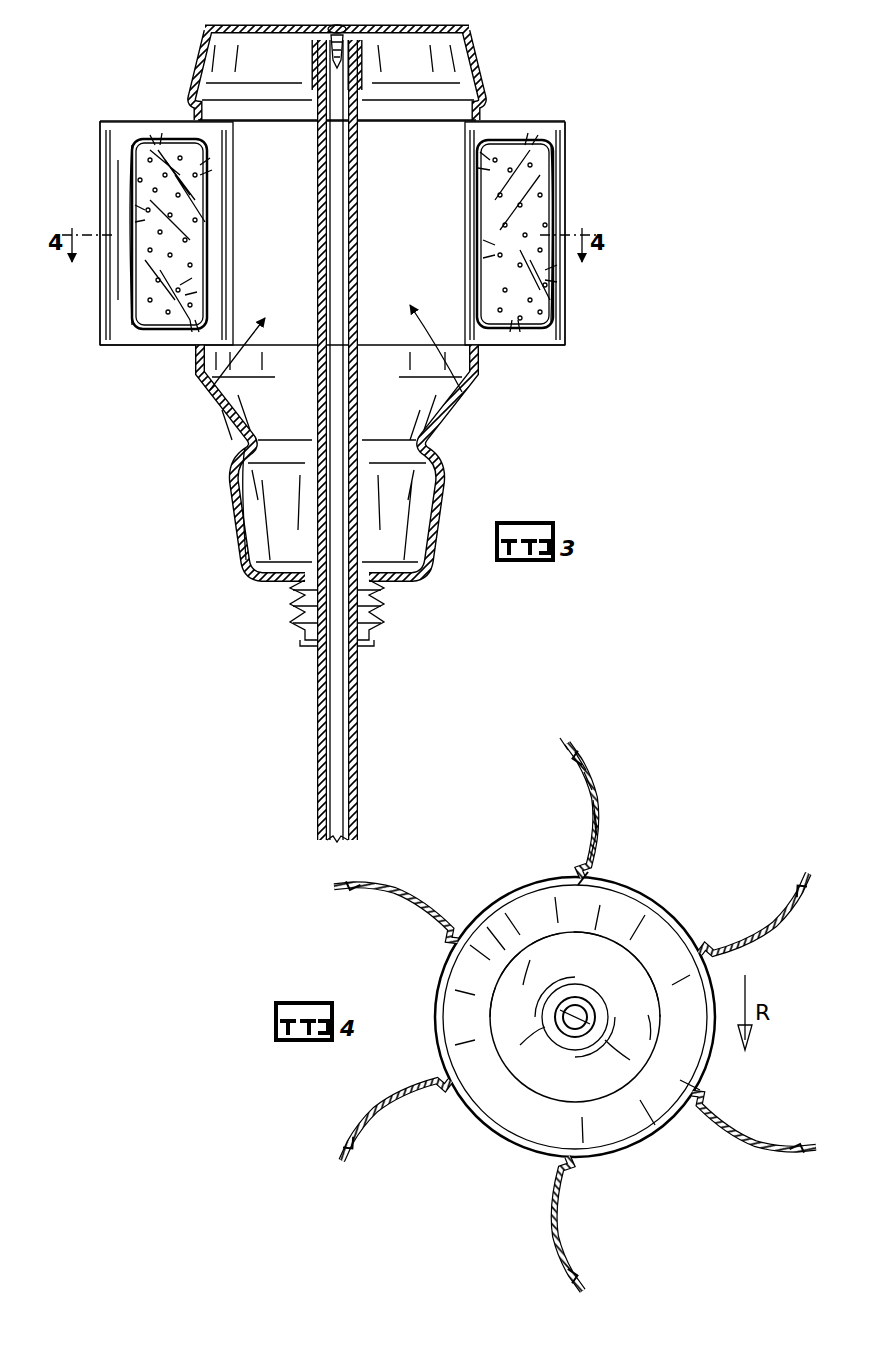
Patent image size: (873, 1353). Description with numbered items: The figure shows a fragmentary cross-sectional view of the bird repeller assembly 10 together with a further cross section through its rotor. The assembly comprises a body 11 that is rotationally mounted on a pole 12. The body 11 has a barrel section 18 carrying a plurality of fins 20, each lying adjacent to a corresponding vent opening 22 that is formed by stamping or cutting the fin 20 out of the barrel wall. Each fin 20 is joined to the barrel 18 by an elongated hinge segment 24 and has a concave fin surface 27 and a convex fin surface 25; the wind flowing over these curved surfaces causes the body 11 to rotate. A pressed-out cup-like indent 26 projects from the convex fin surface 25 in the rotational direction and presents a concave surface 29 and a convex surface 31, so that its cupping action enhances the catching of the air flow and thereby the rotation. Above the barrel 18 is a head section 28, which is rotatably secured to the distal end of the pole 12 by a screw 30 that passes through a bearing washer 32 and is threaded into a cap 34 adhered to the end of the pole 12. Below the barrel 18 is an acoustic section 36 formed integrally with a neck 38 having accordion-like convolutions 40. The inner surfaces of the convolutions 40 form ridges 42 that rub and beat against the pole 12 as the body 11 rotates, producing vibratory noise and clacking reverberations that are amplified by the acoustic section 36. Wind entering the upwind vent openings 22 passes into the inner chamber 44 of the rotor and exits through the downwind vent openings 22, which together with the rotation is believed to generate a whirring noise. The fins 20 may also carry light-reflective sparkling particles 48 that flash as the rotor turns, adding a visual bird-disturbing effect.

In FIG. 3, the bird repeller assembly 10 is at (545, 410).
In FIG. 3, the body 11 is at (550, 45).
In FIG. 3, the pole 12 is at (358, 750).
In FIG. 3, the barrel section 18 is at (482, 348).
In FIG. 3, the fin 20 is at (103, 165).
In FIG. 4, the fin 20 is at (565, 748).
In FIG. 3, the vent opening 22 is at (344, 367).
In FIG. 4, the vent opening 22 is at (530, 882).
In FIG. 4, the hinge segment 24 is at (592, 878).
In FIG. 3, the convex fin surface 25 is at (560, 126).
In FIG. 4, the convex fin surface 25 is at (585, 760).
In FIG. 3, the fin indent 26 is at (145, 140).
In FIG. 4, the fin indent 26 is at (622, 828).
In FIG. 3, the concave fin surface 27 is at (125, 333).
In FIG. 4, the concave fin surface 27 is at (578, 760).
In FIG. 3, the head section 28 is at (470, 58).
In FIG. 3, the concave surface 29 is at (205, 225).
In FIG. 4, the concave surface 29 is at (590, 805).
In FIG. 3, the screw 30 is at (332, 26).
In FIG. 4, the convex surface 31 is at (596, 808).
In FIG. 3, the bearing washer 32 is at (348, 36).
In FIG. 3, the cap 34 is at (312, 62).
In FIG. 3, the acoustic section 36 is at (442, 495).
In FIG. 3, the neck 38 is at (376, 642).
In FIG. 3, the convolutions 40 is at (402, 604).
In FIG. 3, the ridges 42 is at (310, 642).
In FIG. 4, the inner chamber 44 is at (665, 945).
In FIG. 3, the sparkling particles 48 is at (140, 205).